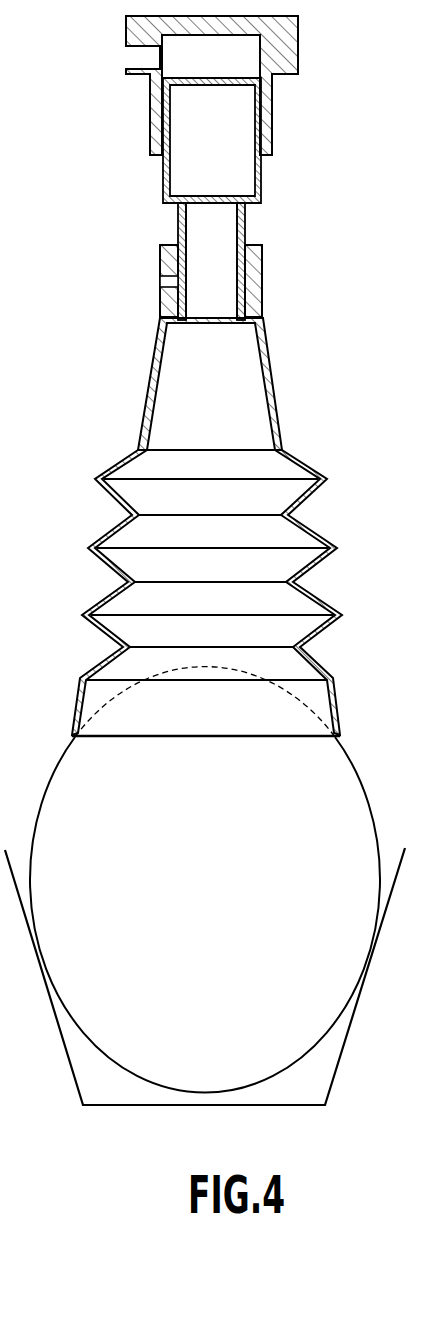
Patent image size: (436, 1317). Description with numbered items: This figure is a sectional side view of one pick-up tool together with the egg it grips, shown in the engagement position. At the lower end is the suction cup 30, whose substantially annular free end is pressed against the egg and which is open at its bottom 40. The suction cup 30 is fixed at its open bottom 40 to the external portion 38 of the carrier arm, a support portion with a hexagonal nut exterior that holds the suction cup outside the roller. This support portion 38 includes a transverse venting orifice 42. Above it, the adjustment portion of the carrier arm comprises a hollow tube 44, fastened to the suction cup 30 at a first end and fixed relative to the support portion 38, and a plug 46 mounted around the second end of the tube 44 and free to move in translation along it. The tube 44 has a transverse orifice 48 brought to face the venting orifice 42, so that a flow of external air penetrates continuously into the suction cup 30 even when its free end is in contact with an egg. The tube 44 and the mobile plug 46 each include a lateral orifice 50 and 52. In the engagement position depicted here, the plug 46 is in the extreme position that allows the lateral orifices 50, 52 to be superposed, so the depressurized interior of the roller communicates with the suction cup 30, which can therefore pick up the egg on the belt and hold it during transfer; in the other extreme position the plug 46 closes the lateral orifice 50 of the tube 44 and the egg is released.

The suction cup 30 is at (333, 545).
The external portion 38 is at (262, 275).
The bottom 40 is at (197, 327).
The transverse venting orifice 42 is at (160, 280).
The hollow tube 44 is at (178, 225).
The plug 46 is at (272, 127).
The transverse orifice 48 is at (189, 282).
The lateral orifice 50 is at (170, 97).
The lateral orifice 52 is at (138, 58).